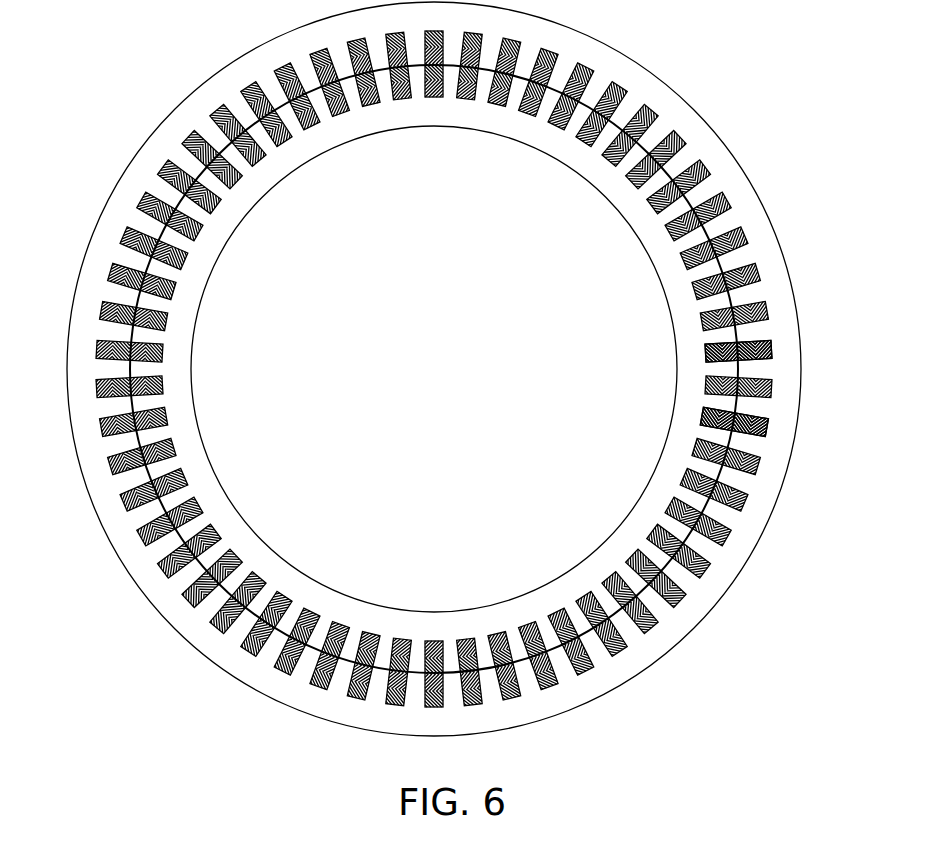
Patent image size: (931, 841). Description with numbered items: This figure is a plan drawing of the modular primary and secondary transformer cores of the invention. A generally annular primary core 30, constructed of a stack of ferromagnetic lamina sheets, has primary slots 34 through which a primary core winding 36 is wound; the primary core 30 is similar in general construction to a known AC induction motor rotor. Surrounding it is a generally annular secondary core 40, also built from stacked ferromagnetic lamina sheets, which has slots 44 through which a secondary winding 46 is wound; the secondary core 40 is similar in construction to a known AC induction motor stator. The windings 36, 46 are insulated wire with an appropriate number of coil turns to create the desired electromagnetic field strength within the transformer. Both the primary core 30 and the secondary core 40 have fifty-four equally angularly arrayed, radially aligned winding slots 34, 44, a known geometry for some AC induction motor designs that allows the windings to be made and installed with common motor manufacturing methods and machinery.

The primary core 30 is at (324, 559).
The secondary core 40 is at (798, 214).
The primary slots 34 is at (184, 261).
The primary core winding 36 is at (166, 322).
The slots 44 is at (140, 200).
The secondary winding 46 is at (182, 165).